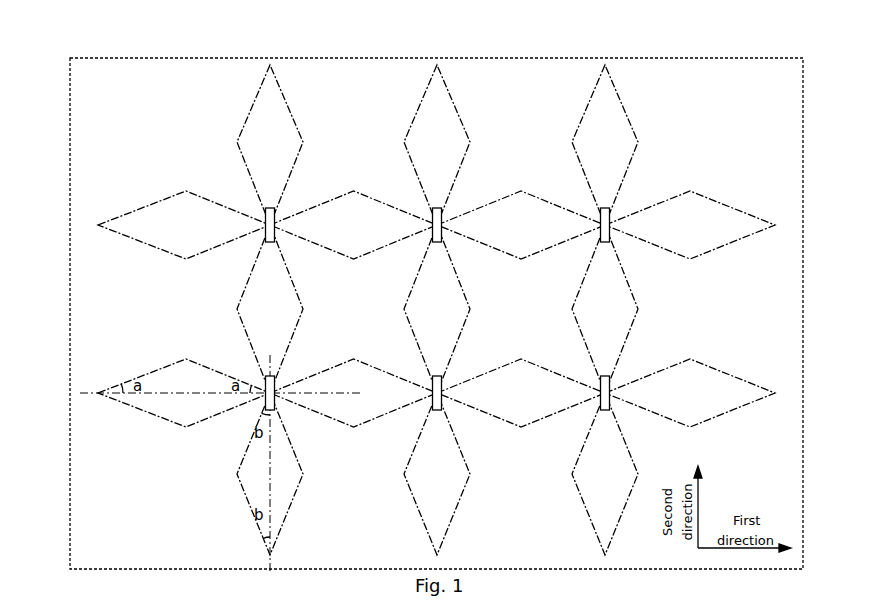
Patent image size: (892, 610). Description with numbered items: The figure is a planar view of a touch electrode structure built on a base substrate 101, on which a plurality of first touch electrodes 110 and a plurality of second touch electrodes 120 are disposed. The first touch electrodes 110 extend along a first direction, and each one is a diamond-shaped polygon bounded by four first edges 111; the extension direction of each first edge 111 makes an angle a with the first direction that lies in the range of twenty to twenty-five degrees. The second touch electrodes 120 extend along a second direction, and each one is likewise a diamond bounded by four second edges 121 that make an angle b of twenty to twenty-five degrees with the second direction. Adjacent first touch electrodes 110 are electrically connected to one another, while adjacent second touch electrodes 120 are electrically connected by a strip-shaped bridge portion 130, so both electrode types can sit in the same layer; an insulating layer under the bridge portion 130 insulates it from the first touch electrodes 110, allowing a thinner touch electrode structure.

The base substrate 101 is at (693, 87).
The first touch electrode 110 is at (436, 380).
The first edge 111 is at (140, 375).
The second touch electrode 120 is at (299, 310).
The second edge 121 is at (293, 112).
The bridge portion 130 is at (442, 222).